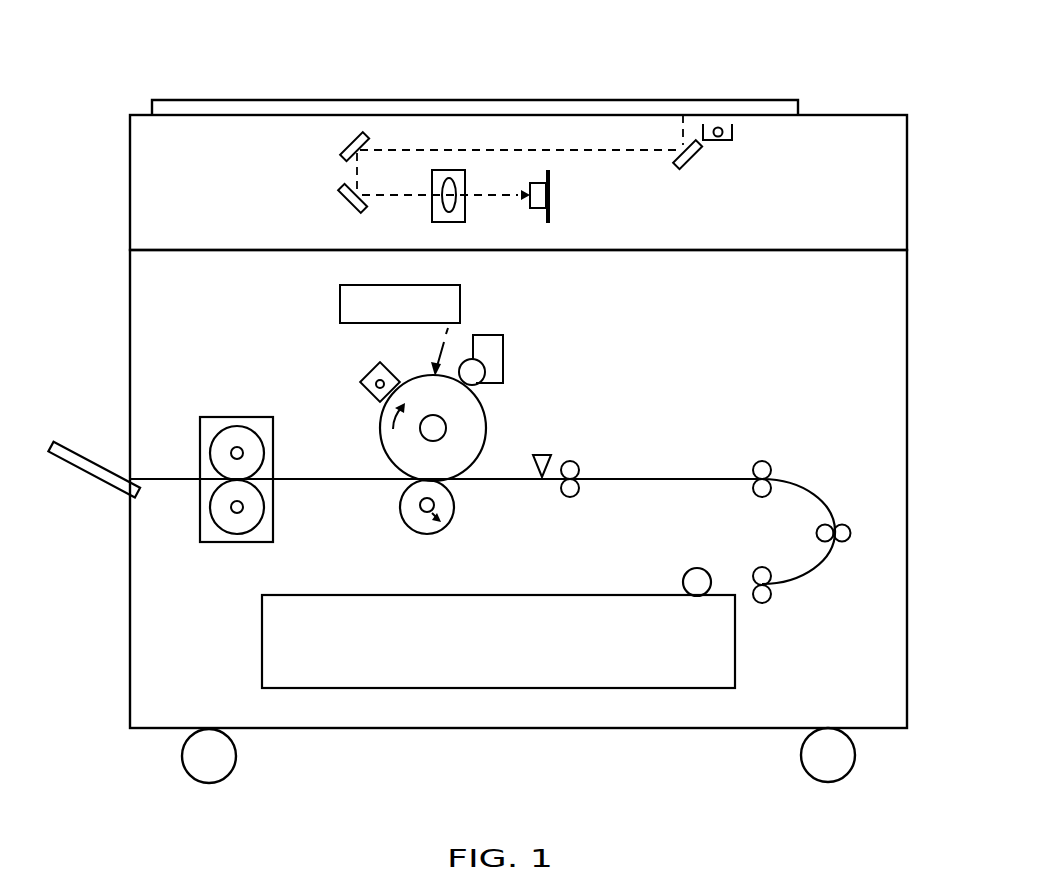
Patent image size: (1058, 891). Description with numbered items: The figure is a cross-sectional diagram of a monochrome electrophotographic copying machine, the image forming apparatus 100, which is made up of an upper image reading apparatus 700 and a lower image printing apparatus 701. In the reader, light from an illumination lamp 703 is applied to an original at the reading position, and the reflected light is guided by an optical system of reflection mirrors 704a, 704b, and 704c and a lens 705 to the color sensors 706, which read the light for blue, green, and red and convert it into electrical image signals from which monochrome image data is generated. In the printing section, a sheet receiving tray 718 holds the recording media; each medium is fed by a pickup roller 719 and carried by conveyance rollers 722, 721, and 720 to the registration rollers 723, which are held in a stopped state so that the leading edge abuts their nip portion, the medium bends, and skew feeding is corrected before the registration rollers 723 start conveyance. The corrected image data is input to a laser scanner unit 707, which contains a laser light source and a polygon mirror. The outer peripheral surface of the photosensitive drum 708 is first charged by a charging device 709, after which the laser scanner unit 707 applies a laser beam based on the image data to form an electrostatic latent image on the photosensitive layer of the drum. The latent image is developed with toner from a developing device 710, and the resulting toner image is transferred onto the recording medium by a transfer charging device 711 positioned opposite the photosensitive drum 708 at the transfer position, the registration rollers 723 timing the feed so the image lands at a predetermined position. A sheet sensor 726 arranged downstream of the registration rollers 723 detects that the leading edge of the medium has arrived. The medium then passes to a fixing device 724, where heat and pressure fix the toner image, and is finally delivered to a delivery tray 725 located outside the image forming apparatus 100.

The image forming apparatus 100 is at (660, 26).
The image reading apparatus 700 is at (908, 143).
The image printing apparatus 701 is at (908, 307).
The illumination lamp 703 is at (734, 135).
The reflection mirror 704a is at (700, 166).
The reflection mirror 704b is at (342, 142).
The reflection mirror 704c is at (341, 194).
The lens 705 is at (448, 222).
The color sensors 706 is at (550, 196).
The laser scanner unit 707 is at (340, 300).
The photosensitive drum 708 is at (380, 437).
The charging device 709 is at (365, 373).
The developing device 710 is at (490, 335).
The transfer charging device 711 is at (455, 510).
The sheet receiving tray 718 is at (262, 628).
The pickup roller 719 is at (684, 577).
The conveyance rollers 720 is at (754, 468).
The conveyance rollers 721 is at (841, 526).
The conveyance rollers 722 is at (771, 596).
The registration rollers 723 is at (579, 492).
The fixing device 724 is at (274, 518).
The delivery tray 725 is at (60, 441).
The sheet sensor 726 is at (540, 452).